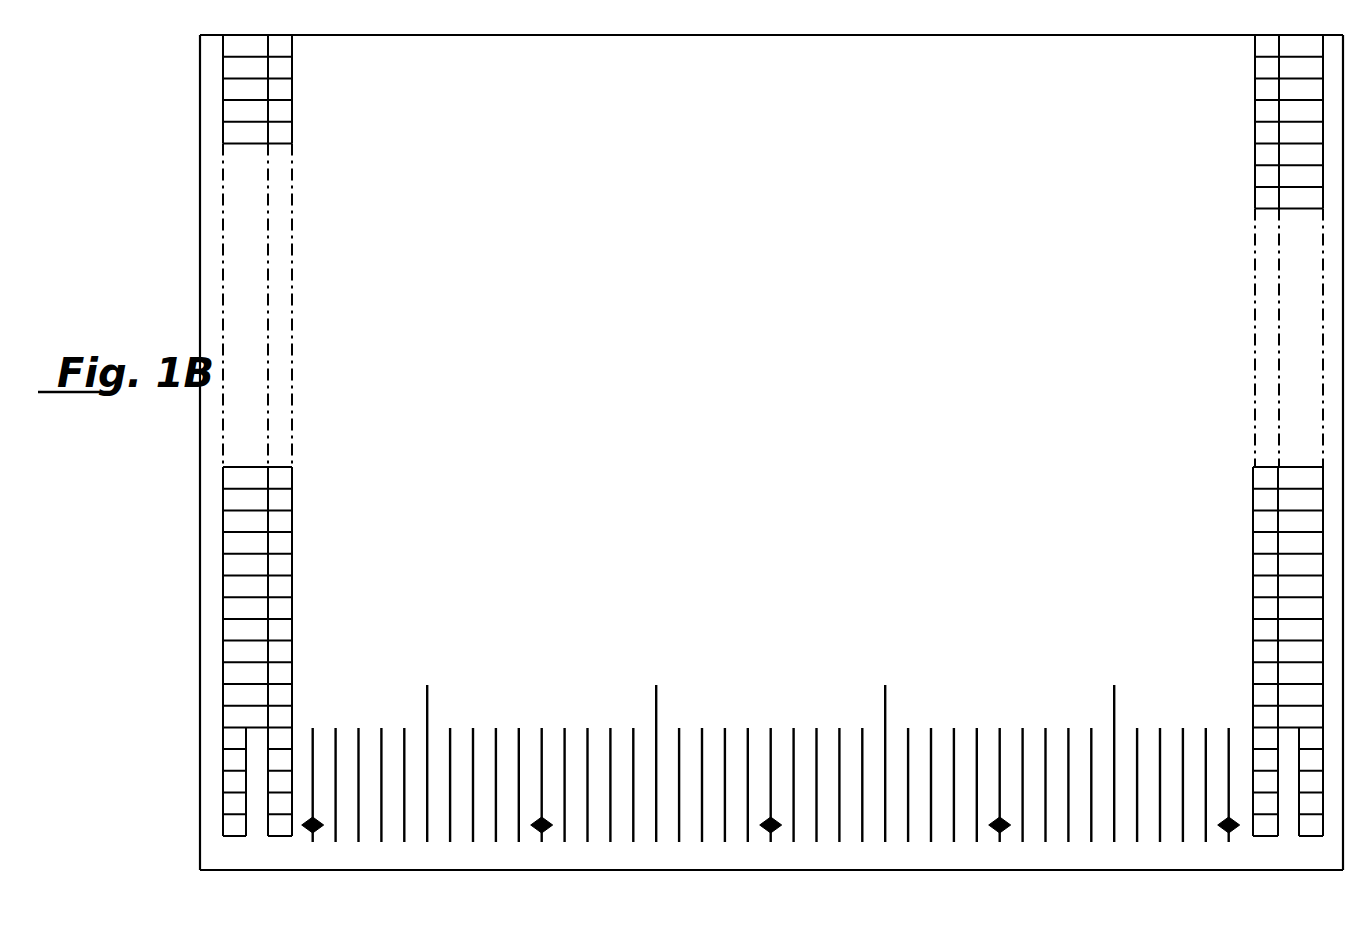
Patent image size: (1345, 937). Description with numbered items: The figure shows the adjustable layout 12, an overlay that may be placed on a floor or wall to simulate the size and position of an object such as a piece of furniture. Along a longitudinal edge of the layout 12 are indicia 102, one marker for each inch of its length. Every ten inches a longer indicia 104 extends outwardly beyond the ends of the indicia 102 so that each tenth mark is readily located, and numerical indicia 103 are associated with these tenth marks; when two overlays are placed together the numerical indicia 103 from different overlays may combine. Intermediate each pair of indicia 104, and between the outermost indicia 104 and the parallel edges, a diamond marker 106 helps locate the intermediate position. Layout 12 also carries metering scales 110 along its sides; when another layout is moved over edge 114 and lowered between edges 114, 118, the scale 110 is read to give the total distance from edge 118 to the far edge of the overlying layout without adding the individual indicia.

The adjustable layout 12 is at (190, 182).
The indicia 102 is at (474, 725).
The numerical indicia 103 is at (1333, 855).
The tenth indicia 104 is at (660, 688).
The diamond marker 106 is at (775, 815).
The metering scale 110 is at (293, 113).
The edge 114 is at (238, 35).
The edge 118 is at (235, 870).